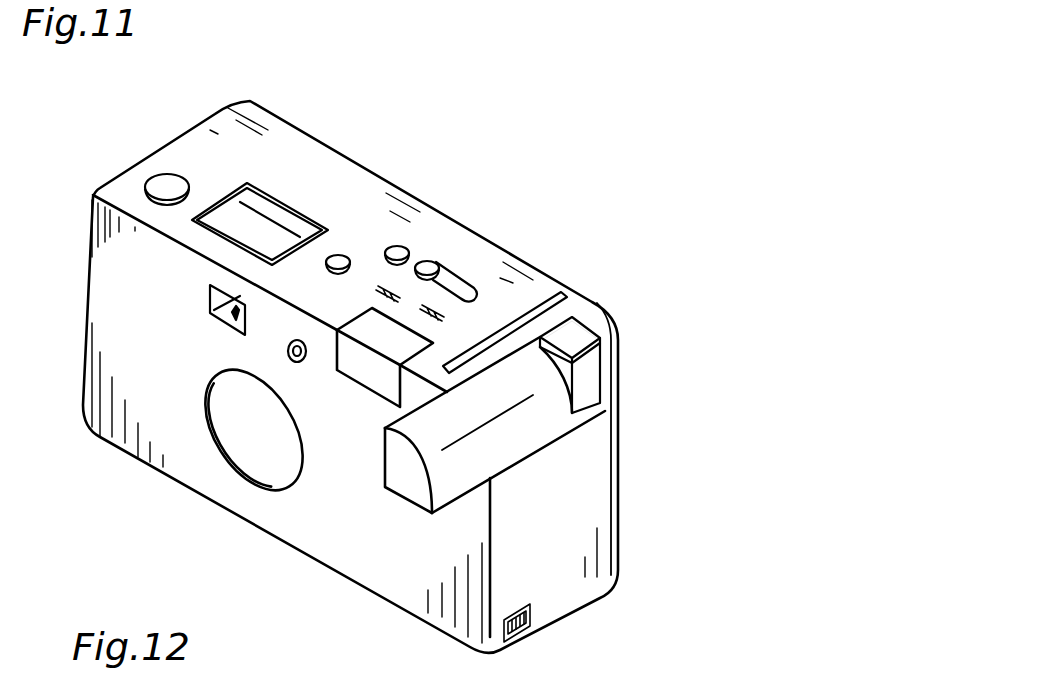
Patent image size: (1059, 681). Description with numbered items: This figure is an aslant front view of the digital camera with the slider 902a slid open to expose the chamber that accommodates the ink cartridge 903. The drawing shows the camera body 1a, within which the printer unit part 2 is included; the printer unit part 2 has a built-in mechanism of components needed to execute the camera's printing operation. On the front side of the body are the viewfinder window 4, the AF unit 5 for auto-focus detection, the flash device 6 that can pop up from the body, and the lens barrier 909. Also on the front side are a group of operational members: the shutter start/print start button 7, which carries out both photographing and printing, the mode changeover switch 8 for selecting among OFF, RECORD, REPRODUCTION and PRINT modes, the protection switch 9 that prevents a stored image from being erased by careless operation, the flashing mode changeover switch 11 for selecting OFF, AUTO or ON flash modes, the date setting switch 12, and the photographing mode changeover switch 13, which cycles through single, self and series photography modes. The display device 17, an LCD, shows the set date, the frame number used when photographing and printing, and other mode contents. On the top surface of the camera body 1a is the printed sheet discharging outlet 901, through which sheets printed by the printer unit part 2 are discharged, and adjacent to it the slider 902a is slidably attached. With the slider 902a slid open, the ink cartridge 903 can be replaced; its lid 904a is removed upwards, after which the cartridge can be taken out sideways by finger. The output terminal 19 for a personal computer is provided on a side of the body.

The camera body 1a is at (410, 184).
The printer unit part 2 is at (572, 577).
The viewfinder window 4 is at (210, 307).
The AF unit 5 is at (298, 362).
The flash device 6 is at (377, 388).
The shutter start/print start button 7 is at (148, 182).
The mode changeover switch 8 is at (433, 263).
The protection switch 9 is at (405, 250).
The flashing mode changeover switch 11 is at (342, 257).
The date setting switch 12 is at (378, 294).
The photographing mode changeover switch 13 is at (446, 317).
The display device 17 is at (290, 198).
The output terminal for PC 19 is at (521, 632).
The printed sheet discharging outlet 901 is at (543, 307).
The slider 902a is at (545, 428).
The ink cartridge 903 is at (593, 378).
The lid 904a is at (582, 324).
The lens barrier 909 is at (235, 462).